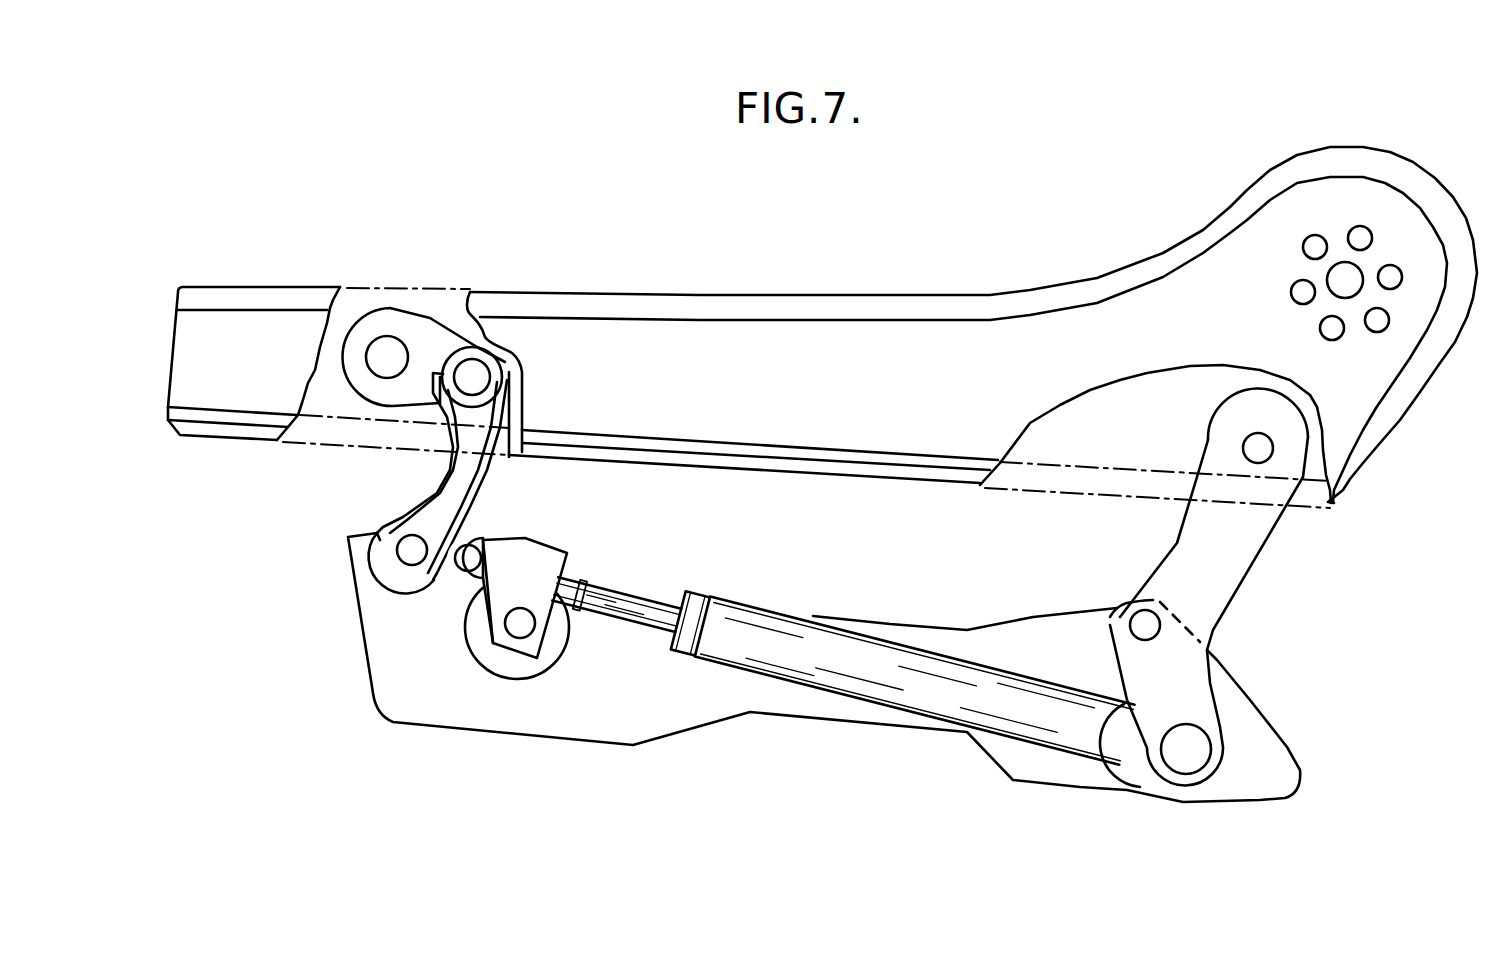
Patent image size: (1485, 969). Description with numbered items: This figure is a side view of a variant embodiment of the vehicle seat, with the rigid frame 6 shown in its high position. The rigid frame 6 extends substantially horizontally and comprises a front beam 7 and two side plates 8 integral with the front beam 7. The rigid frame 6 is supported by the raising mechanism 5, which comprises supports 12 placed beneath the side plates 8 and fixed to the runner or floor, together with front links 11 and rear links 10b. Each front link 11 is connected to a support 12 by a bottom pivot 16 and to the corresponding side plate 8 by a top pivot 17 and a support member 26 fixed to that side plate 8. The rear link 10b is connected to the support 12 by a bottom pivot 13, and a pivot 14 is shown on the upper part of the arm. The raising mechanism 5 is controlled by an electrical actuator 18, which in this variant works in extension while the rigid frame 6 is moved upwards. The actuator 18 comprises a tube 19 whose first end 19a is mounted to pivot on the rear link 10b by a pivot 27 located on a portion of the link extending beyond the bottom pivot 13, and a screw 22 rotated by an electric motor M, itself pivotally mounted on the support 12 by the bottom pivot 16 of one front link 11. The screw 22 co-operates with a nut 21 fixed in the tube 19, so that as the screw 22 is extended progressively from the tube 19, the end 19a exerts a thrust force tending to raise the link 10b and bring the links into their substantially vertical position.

The raising mechanism 5 is at (346, 509).
The rigid frame 6 is at (738, 285).
The front beam 7 is at (232, 340).
The side plate 8 is at (617, 289).
The rear link 10b is at (1205, 586).
The front link 11 is at (465, 478).
The support 12 is at (413, 645).
The bottom pivot 13 is at (1135, 620).
The pivot pin 14 is at (1260, 452).
The bottom pivot 16 is at (406, 550).
The top pivot 17 is at (475, 373).
The electrical actuator 18 is at (855, 679).
The tube 19 is at (915, 680).
The first end 19a is at (1153, 785).
The nut 21 is at (690, 623).
The screw 22 is at (616, 604).
The support member 26 is at (425, 340).
The pivot 27 is at (1193, 752).
The electric motor M is at (517, 683).